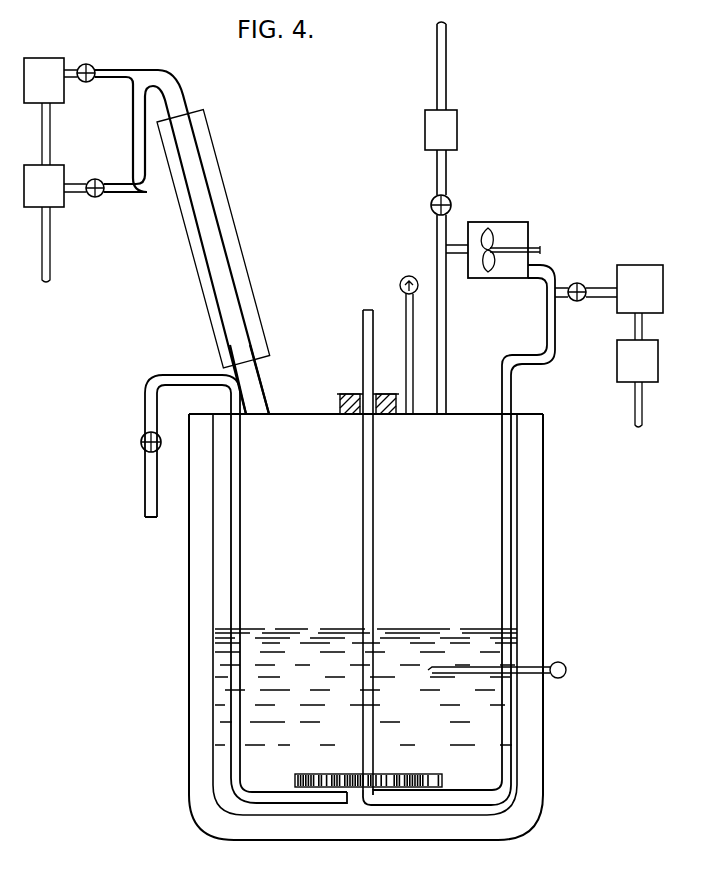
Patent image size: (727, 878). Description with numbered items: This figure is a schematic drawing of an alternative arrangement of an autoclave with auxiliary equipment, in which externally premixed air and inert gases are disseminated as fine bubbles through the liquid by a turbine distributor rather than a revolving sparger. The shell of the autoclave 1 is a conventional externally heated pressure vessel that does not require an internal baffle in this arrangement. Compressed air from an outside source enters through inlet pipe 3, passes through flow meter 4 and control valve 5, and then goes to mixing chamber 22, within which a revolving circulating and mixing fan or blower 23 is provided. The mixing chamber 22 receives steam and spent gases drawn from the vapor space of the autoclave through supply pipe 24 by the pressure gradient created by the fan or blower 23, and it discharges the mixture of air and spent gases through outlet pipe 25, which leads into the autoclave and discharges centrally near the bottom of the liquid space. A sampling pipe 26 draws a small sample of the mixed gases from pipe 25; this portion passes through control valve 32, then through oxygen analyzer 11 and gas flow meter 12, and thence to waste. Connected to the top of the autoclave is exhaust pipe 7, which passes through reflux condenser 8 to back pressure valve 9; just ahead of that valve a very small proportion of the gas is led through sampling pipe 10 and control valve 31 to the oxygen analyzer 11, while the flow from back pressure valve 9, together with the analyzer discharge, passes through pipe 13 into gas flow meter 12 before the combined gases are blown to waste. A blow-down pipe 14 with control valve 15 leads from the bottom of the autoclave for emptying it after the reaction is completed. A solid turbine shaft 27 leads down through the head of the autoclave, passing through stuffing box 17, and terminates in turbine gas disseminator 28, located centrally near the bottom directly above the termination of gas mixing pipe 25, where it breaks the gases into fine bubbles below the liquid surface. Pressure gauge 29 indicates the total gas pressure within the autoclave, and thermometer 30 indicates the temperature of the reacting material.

The shell of the autoclave 1 is at (544, 563).
The inlet pipe 3 is at (447, 57).
The flow meter 4 is at (458, 130).
The control valve 5 is at (432, 201).
The exhaust pipe 7 is at (258, 383).
The reflux condenser 8 is at (229, 196).
The back pressure control valve 9 is at (99, 196).
The sampling pipe 10 is at (122, 70).
The oxygen analyzer 11 is at (46, 66).
The gas flow meter 12 is at (50, 198).
The pipe 13 is at (133, 136).
The blow-down pipe 14 is at (240, 553).
The control valve 15 is at (141, 442).
The stuffing box 17 is at (354, 395).
The mixing chamber 22 is at (507, 226).
The circulating and mixing fan or blower 23 is at (540, 248).
The supply pipe 24 is at (449, 346).
The outlet pipe 25 is at (552, 270).
The sampling pipe 26 is at (603, 289).
The turbine shaft 27 is at (363, 346).
The turbine gas disseminator 28 is at (394, 774).
The pressure gauge 29 is at (405, 279).
The thermometer 30 is at (566, 669).
The control valve 31 is at (92, 65).
The control valve 32 is at (578, 301).